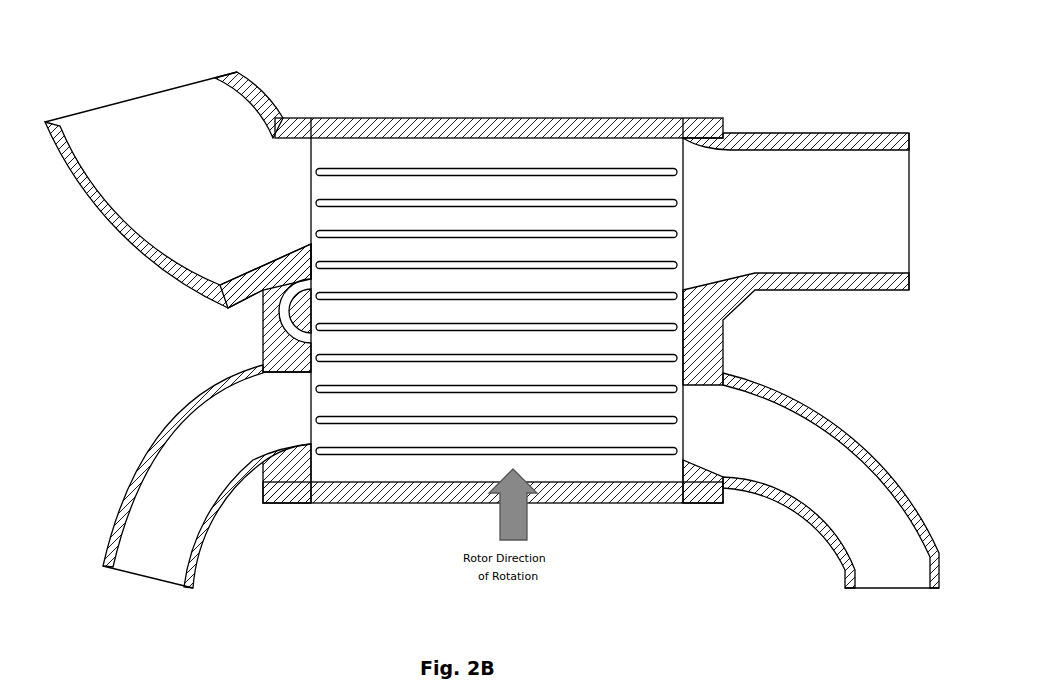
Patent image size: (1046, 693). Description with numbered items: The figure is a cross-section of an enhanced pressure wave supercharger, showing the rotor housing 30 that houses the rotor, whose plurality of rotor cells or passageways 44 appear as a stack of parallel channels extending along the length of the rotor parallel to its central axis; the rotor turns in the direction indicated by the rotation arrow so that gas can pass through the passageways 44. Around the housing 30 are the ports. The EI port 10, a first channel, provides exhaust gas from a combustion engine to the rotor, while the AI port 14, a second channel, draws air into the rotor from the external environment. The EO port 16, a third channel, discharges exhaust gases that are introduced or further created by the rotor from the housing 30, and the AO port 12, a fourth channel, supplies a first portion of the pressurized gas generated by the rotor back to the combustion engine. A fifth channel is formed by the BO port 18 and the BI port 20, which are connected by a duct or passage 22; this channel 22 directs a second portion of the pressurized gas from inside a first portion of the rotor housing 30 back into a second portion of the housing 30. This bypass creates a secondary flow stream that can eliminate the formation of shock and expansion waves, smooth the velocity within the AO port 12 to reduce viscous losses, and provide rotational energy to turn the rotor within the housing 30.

The EI port 10 is at (894, 564).
The AO port 12 is at (161, 548).
The AI port 14 is at (149, 112).
The EO port 16 is at (862, 213).
The BO port 18 is at (311, 345).
The BI port 20 is at (311, 270).
The channel 22 is at (287, 312).
The rotor housing 30 is at (607, 118).
The rotor passageways 44 is at (446, 220).